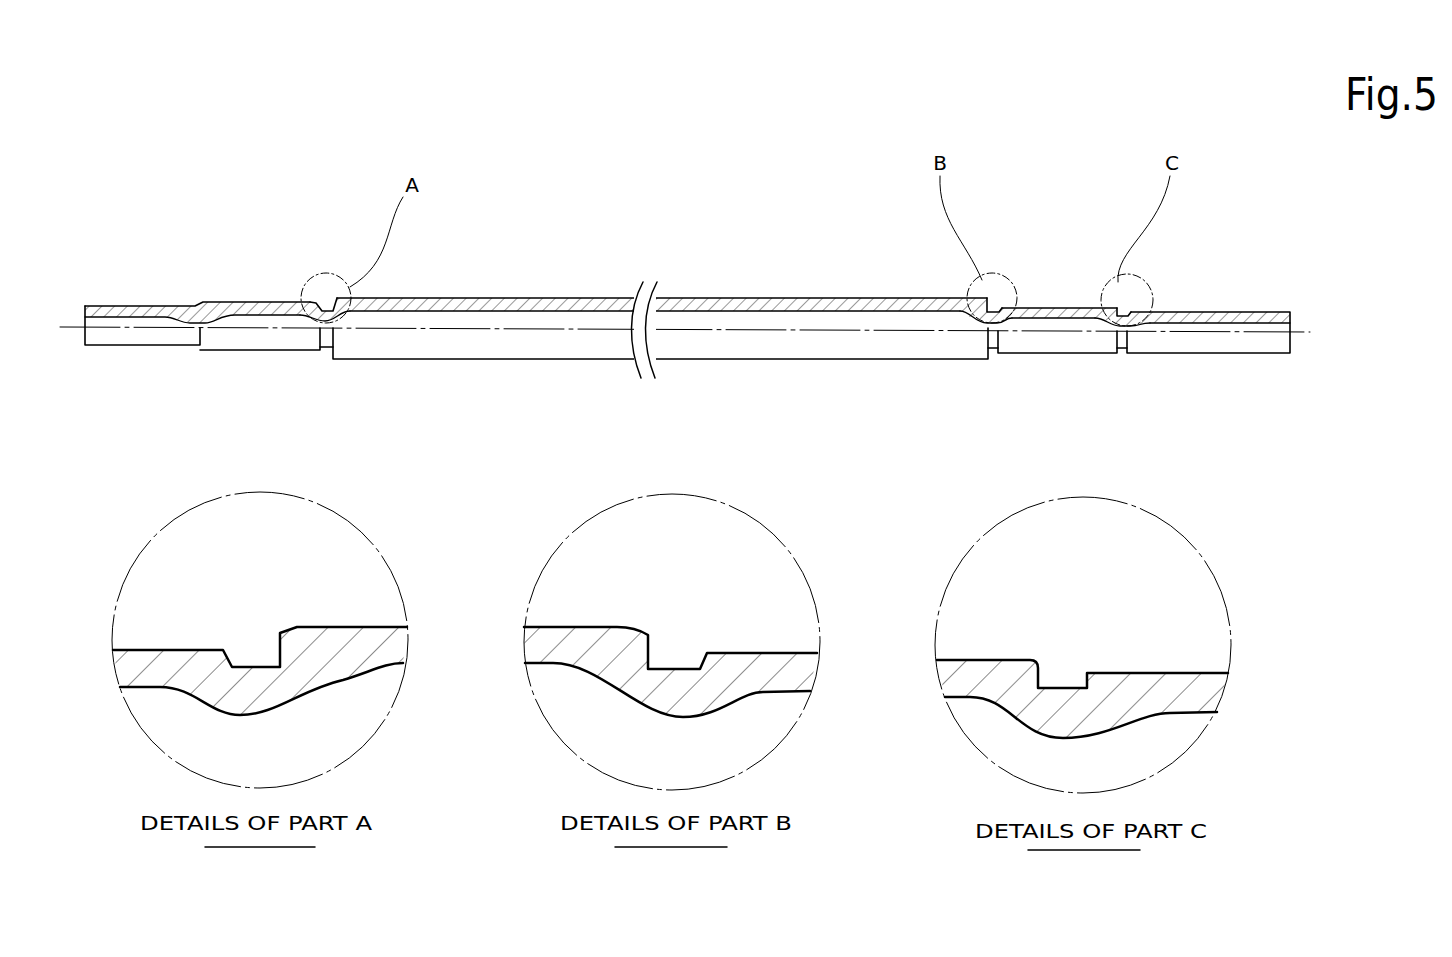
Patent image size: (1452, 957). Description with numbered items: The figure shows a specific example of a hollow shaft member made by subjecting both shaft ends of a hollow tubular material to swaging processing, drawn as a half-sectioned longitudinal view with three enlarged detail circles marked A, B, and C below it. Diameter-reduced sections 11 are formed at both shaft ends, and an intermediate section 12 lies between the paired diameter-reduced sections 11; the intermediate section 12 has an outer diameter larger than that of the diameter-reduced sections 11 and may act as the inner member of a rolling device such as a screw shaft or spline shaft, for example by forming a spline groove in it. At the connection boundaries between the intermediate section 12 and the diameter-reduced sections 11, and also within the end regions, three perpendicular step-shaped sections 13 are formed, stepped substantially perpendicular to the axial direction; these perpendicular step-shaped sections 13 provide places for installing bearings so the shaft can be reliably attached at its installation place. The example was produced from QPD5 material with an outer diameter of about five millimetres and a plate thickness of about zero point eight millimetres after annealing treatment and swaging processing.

The diameter-reduced section 11 is at (260, 301).
The intermediate section 12 is at (513, 298).
The perpendicular step-shaped section 13 is at (325, 303).